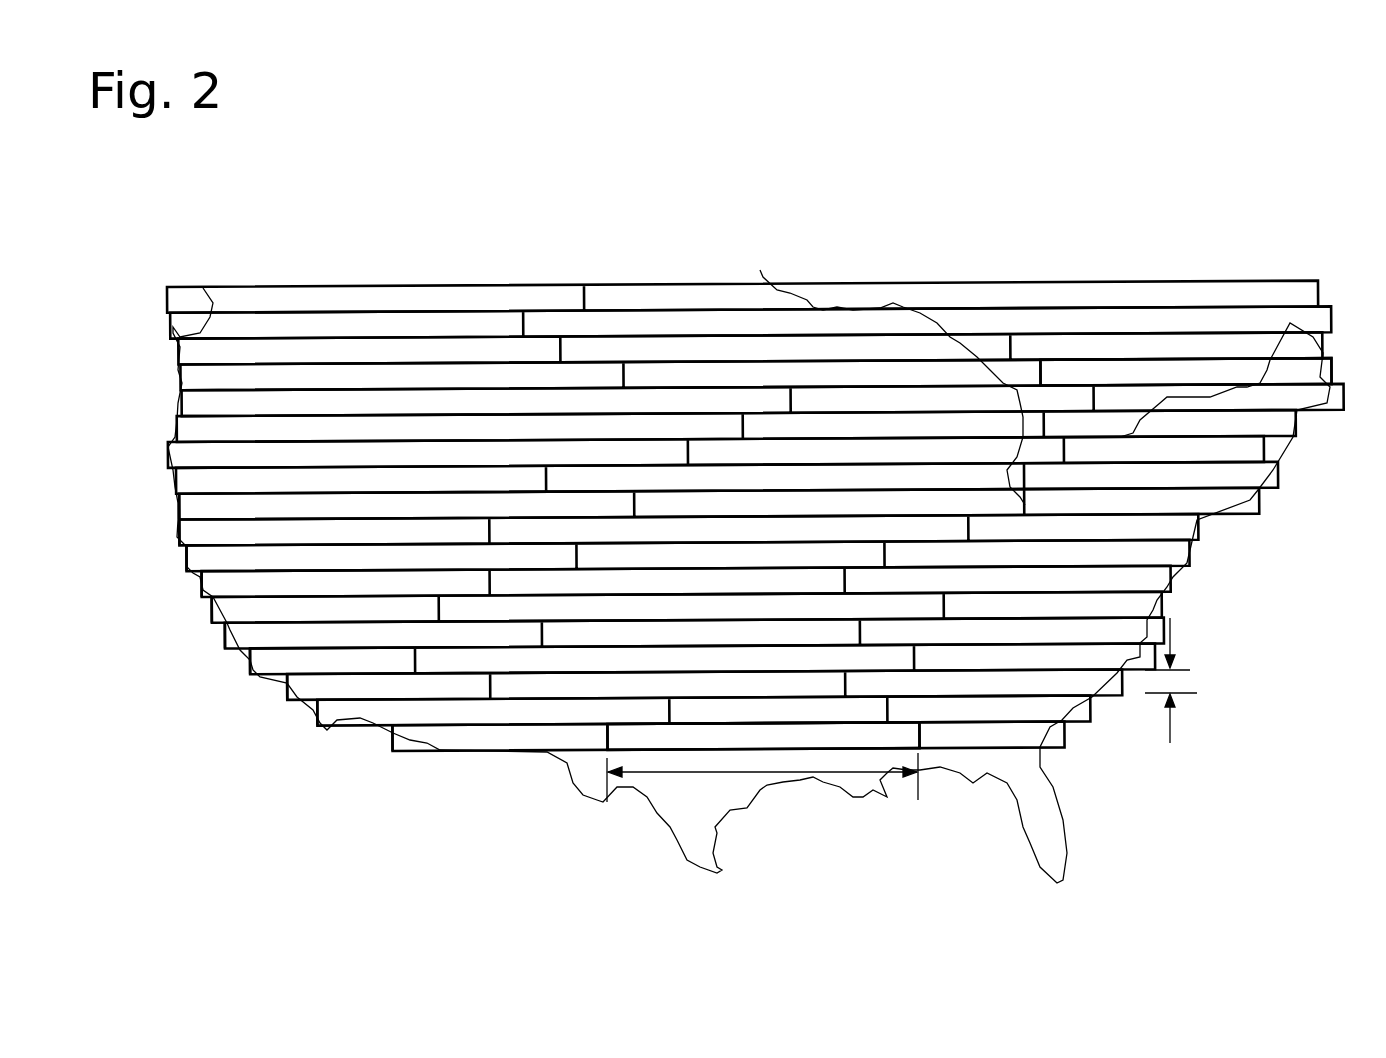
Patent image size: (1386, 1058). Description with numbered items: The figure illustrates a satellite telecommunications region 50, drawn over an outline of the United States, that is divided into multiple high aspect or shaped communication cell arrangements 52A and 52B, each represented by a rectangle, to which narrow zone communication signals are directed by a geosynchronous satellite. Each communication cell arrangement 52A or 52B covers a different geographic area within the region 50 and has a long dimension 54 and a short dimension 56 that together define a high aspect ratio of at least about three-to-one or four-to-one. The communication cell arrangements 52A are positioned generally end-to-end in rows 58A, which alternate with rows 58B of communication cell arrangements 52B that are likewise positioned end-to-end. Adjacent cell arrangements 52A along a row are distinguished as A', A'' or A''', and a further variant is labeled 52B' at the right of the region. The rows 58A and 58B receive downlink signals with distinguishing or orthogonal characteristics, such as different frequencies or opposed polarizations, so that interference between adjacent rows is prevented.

The satellite telecommunications region 50 is at (1290, 548).
The high aspect communication cell arrangement 52A is at (414, 302).
The high aspect communication cell arrangement 52B is at (751, 524).
The strip section B''' 52B' is at (1185, 316).
The long dimension 54 is at (813, 777).
The short dimension 56 is at (1178, 683).
The row 58A is at (178, 512).
The row 58B is at (178, 532).